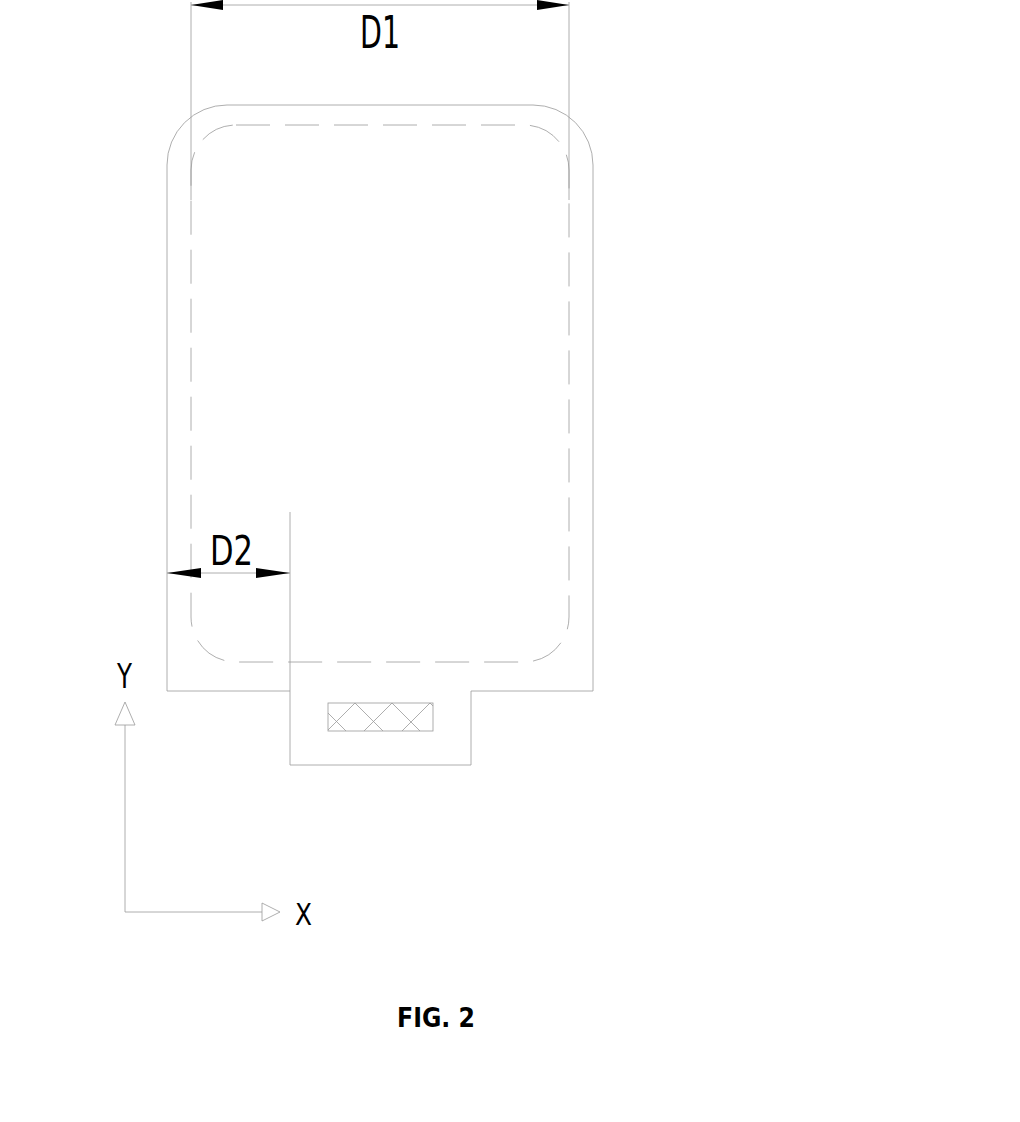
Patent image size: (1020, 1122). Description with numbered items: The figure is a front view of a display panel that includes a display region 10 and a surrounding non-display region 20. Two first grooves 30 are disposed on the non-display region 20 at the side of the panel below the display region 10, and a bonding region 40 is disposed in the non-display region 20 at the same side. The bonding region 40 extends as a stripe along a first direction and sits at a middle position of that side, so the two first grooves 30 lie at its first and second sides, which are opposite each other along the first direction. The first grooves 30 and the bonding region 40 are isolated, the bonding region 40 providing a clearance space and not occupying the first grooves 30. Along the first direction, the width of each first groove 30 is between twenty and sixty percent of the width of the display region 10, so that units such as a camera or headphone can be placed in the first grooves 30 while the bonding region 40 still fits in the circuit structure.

The display region 10 is at (473, 377).
The non-display region 20 is at (453, 398).
The first groove 30 is at (475, 684).
The bonding region 40 is at (419, 775).